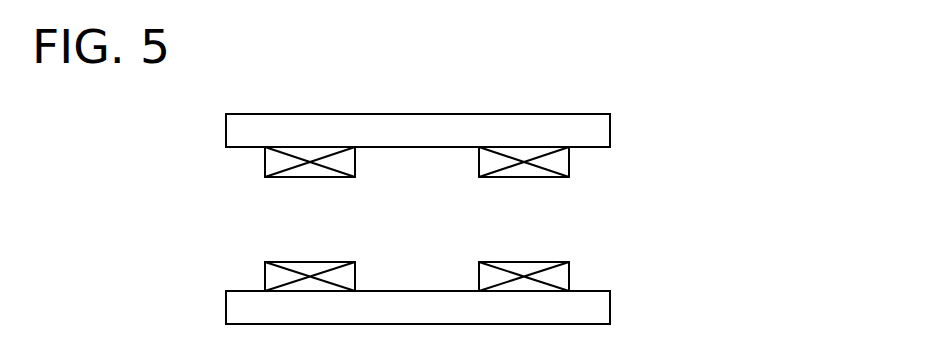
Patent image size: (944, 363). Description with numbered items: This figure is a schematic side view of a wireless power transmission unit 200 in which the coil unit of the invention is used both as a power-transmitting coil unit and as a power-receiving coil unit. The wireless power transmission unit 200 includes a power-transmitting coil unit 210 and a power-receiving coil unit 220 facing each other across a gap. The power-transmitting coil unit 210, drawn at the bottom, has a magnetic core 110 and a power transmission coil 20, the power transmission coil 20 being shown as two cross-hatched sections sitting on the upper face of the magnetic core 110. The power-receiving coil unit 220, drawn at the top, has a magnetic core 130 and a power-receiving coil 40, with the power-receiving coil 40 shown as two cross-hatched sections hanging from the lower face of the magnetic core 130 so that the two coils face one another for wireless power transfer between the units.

The wireless power transmission unit 200 is at (692, 122).
The power-receiving coil unit 220 is at (125, 112).
The magnetic core 130 is at (226, 132).
The power-receiving coil 40 is at (512, 177).
The power-transmitting coil unit 210 is at (728, 195).
The magnetic core 110 is at (610, 303).
The power transmission coil 20 is at (335, 262).